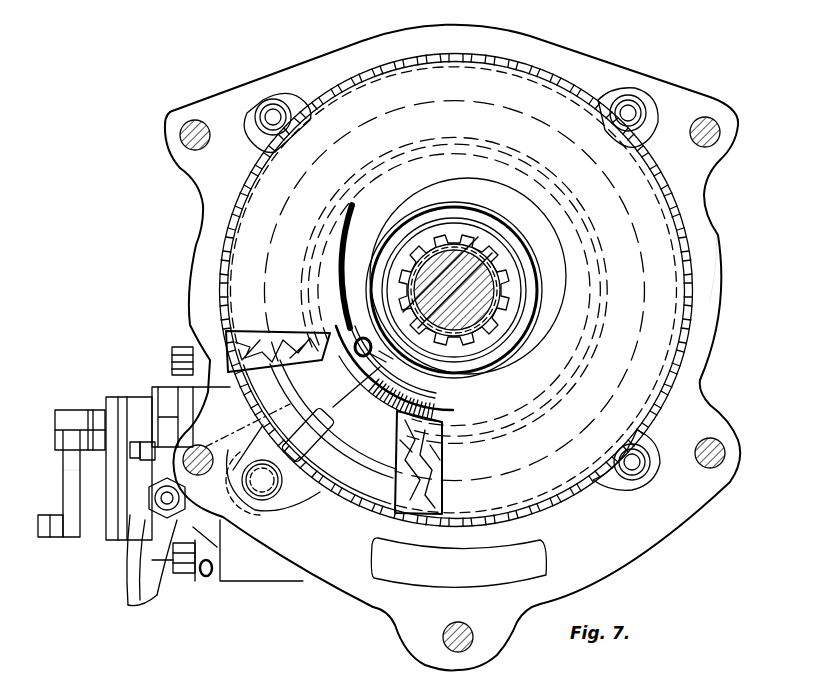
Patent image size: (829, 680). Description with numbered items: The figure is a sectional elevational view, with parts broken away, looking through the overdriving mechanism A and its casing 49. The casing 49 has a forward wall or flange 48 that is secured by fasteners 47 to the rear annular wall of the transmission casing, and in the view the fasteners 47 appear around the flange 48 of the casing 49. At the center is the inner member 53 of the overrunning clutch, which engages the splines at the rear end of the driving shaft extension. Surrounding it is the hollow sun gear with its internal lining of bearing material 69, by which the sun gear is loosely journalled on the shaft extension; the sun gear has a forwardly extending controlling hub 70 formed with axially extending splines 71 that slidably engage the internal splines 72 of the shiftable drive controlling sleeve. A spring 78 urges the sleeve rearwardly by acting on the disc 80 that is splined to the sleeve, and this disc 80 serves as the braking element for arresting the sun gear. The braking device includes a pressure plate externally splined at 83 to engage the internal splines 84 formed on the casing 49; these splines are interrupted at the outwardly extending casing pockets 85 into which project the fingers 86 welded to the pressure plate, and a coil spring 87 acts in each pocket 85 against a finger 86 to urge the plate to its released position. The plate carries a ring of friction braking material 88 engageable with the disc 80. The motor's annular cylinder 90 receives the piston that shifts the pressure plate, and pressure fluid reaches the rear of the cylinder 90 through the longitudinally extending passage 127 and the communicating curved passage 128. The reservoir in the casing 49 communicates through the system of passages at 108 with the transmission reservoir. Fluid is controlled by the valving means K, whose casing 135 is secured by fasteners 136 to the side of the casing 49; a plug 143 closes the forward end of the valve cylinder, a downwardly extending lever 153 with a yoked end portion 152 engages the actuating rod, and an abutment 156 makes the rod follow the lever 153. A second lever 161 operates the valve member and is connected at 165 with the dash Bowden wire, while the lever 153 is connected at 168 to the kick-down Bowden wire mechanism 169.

The overdriving mechanism A is at (690, 198).
The fasteners 47 is at (192, 120).
The forward wall or flange 48 is at (168, 130).
The casing 49 is at (693, 247).
The inner member 53 is at (454, 290).
The bearing material 69 is at (497, 289).
The controlling hub 70 is at (500, 272).
The splines 71 is at (447, 282).
The internal splines 72 is at (440, 236).
The spring 78 is at (505, 230).
The disc 80 is at (410, 56).
The external splines 83 is at (505, 60).
The internal splines 84 is at (560, 74).
The casing pockets 85 is at (283, 100).
The fingers 86 is at (300, 108).
The coil spring 87 is at (265, 108).
The friction braking material 88 is at (248, 338).
The annular cylinder 90 is at (370, 518).
The system of passages 108 is at (400, 572).
The longitudinally extending passage 127 is at (258, 504).
The curved passage 128 is at (297, 486).
The casing 135 is at (130, 400).
The fasteners 136 is at (180, 348).
The plug 143 is at (157, 587).
The yoked end portion 152 is at (131, 547).
The lever 153 is at (166, 416).
The abutment 156 is at (173, 567).
The second lever 161 is at (68, 476).
The connection 165 is at (52, 537).
The connection 168 is at (130, 450).
The Bowden wire mechanism 169 is at (146, 446).
The valving means K is at (127, 593).